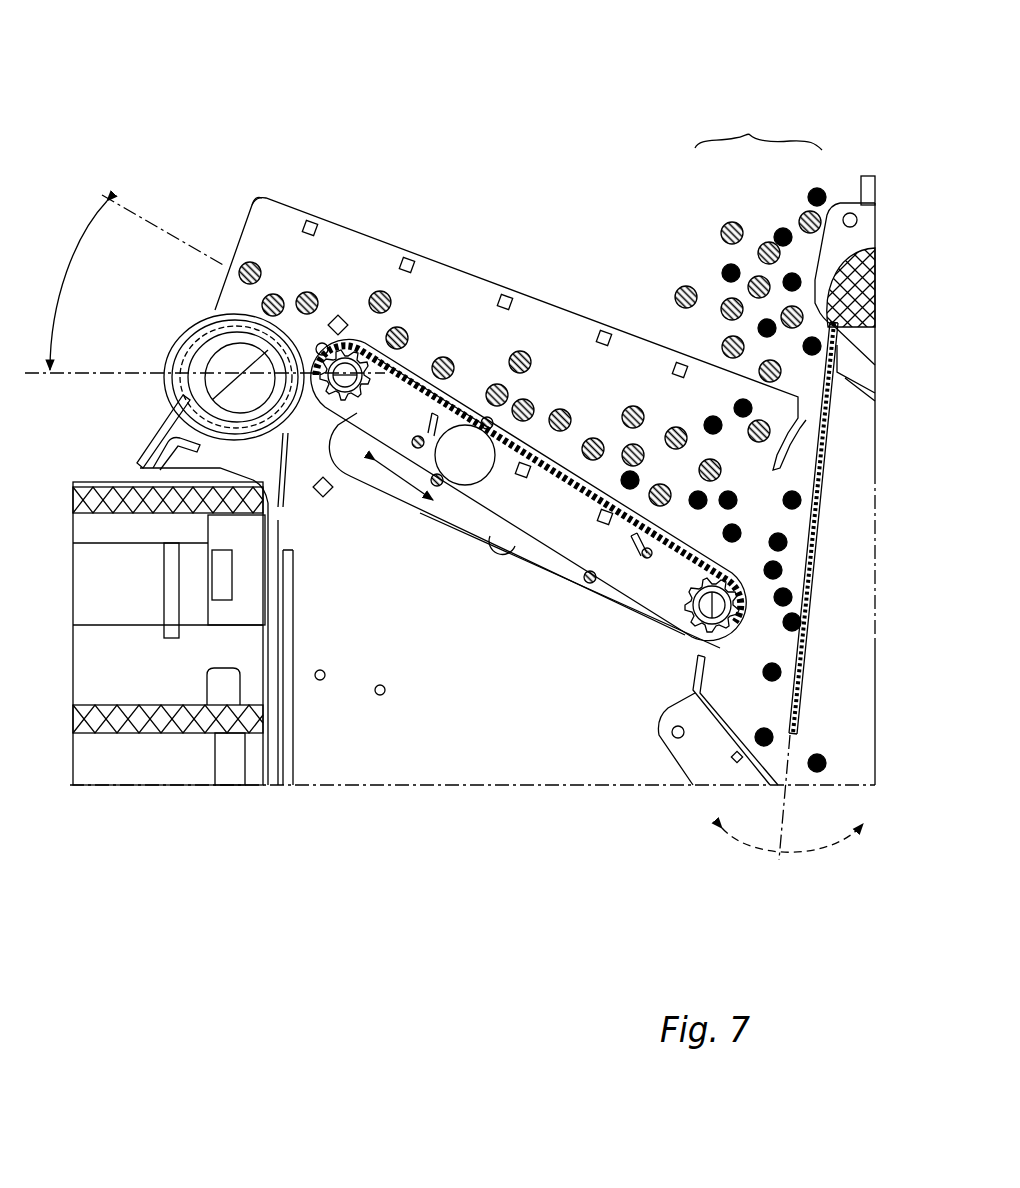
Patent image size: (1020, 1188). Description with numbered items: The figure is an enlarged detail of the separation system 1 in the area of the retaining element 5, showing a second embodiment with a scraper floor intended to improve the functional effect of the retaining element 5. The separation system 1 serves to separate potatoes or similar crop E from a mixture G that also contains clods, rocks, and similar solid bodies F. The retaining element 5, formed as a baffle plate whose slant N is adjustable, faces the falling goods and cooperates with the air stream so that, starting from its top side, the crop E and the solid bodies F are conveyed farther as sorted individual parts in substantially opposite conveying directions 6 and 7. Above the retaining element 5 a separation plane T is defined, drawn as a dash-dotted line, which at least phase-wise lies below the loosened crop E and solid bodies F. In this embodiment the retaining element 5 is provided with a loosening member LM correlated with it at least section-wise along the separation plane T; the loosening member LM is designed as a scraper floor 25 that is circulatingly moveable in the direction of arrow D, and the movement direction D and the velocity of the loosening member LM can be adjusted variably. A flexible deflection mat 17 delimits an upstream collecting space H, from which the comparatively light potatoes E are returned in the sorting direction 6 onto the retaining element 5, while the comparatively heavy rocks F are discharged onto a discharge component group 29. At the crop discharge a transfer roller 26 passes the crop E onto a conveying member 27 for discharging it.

The separation system 1 is at (503, 70).
The retaining element 5 is at (547, 481).
The conveying direction 6 is at (607, 405).
The conveying direction 7 is at (745, 478).
The deflection mat 17 is at (808, 670).
The scraper floor 25 is at (591, 583).
The transfer roller 26 is at (200, 332).
The conveying member 27 is at (180, 762).
The discharge component group 29 is at (697, 753).
The crop E is at (307, 295).
The solid bodies F is at (783, 237).
The mixture G is at (750, 135).
The collecting space H is at (756, 447).
The separation plane T is at (165, 233).
The slant N is at (78, 285).
The movement direction D is at (410, 483).
The loosening member LM is at (548, 560).